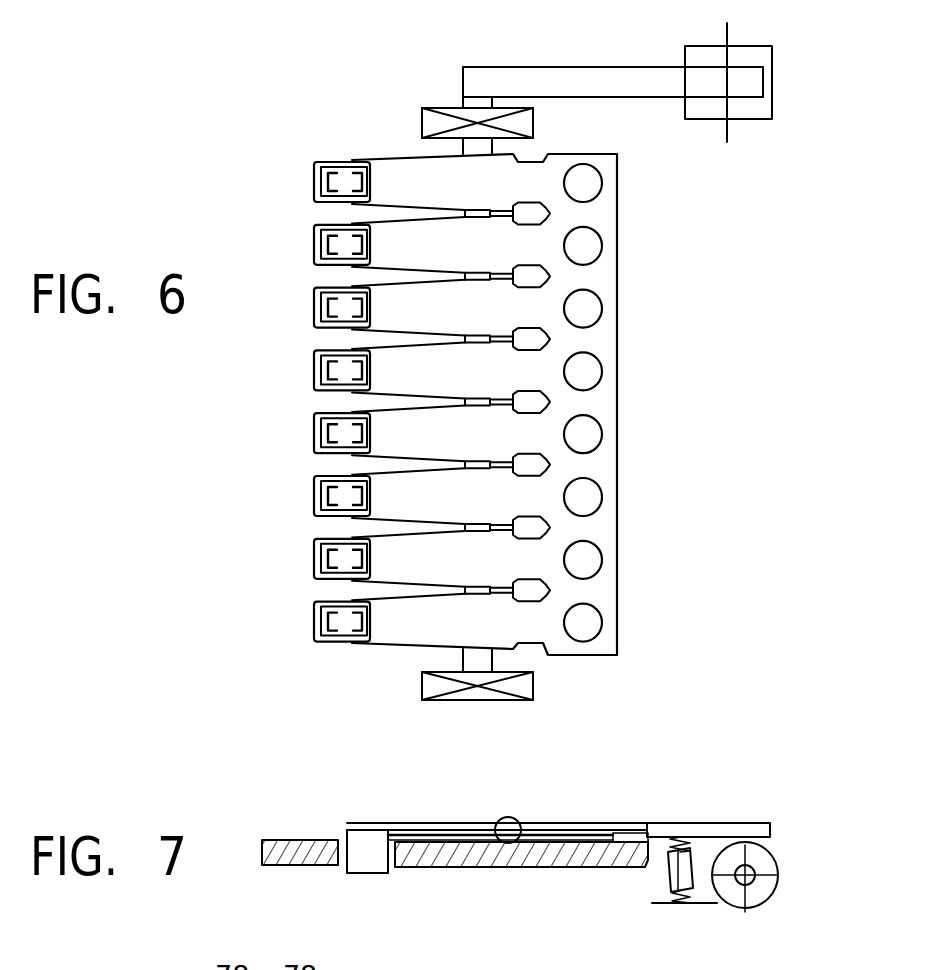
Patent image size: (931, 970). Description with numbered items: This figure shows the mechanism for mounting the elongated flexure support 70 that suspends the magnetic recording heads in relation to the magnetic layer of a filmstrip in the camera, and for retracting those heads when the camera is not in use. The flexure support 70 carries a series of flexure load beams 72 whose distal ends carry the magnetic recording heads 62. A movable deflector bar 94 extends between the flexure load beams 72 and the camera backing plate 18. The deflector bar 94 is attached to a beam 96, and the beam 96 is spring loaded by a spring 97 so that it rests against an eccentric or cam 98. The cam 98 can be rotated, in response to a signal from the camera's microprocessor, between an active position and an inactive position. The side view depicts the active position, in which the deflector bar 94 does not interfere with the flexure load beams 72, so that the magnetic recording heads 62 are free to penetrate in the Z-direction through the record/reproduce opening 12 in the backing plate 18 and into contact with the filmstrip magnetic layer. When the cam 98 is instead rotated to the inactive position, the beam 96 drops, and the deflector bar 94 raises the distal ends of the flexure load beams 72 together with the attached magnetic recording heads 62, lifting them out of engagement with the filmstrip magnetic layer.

In FIG. 7, the record/reproduce opening 12 is at (342, 872).
In FIG. 7, the camera backing plate 18 is at (270, 866).
In FIG. 7, the magnetic recording heads 62 is at (375, 873).
In FIG. 6, the flexure support 70 is at (658, 340).
In FIG. 7, the flexure load beams 72 is at (398, 815).
In FIG. 6, the movable deflector bar 94 is at (470, 656).
In FIG. 7, the movable deflector bar 94 is at (514, 818).
In FIG. 6, the beam 96 is at (555, 73).
In FIG. 7, the spring 97 is at (667, 870).
In FIG. 6, the cam 98 is at (772, 86).
In FIG. 7, the cam 98 is at (777, 887).